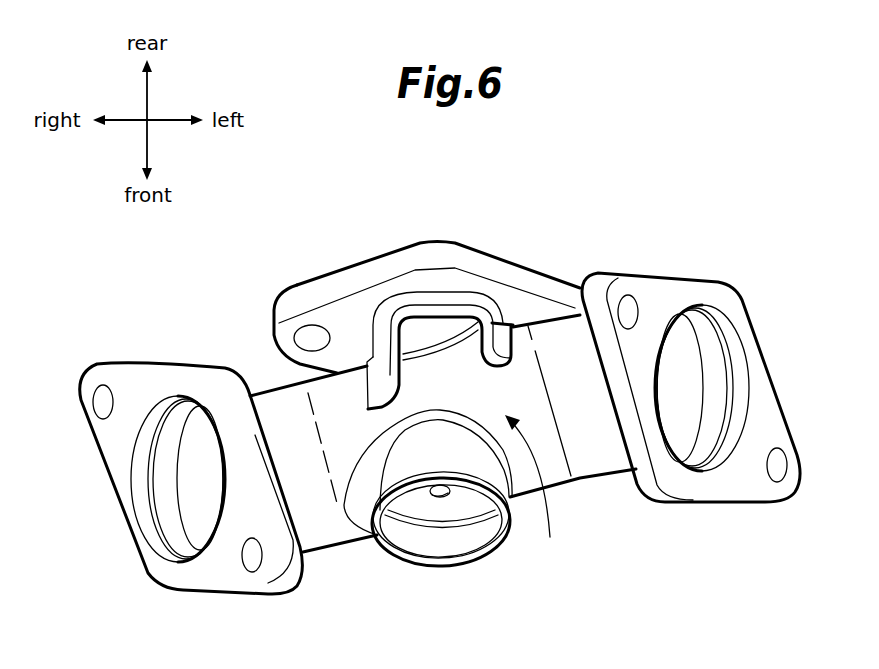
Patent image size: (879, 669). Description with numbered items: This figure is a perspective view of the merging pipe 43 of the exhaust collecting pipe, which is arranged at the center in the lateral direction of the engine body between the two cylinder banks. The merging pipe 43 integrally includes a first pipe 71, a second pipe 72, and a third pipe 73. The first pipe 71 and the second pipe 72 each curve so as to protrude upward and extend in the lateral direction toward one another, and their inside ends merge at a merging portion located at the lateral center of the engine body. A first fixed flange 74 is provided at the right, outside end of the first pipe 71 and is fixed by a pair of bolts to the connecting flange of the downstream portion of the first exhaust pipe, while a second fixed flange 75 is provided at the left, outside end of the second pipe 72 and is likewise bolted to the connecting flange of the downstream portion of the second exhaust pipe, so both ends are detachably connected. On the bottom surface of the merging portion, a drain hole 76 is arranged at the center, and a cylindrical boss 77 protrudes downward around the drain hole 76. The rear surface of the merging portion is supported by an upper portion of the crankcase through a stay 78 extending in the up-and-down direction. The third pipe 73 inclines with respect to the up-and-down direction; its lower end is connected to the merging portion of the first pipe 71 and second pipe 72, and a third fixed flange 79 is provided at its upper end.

The merging pipe 43 is at (647, 163).
The first pipe 71 is at (278, 392).
The second pipe 72 is at (537, 313).
The third pipe 73 is at (443, 323).
The first fixed flange 74 is at (203, 595).
The second fixed flange 75 is at (763, 345).
The drain hole 76 is at (443, 497).
The cylindrical boss 77 is at (395, 557).
The stay 78 is at (435, 306).
The third fixed flange 79 is at (345, 268).